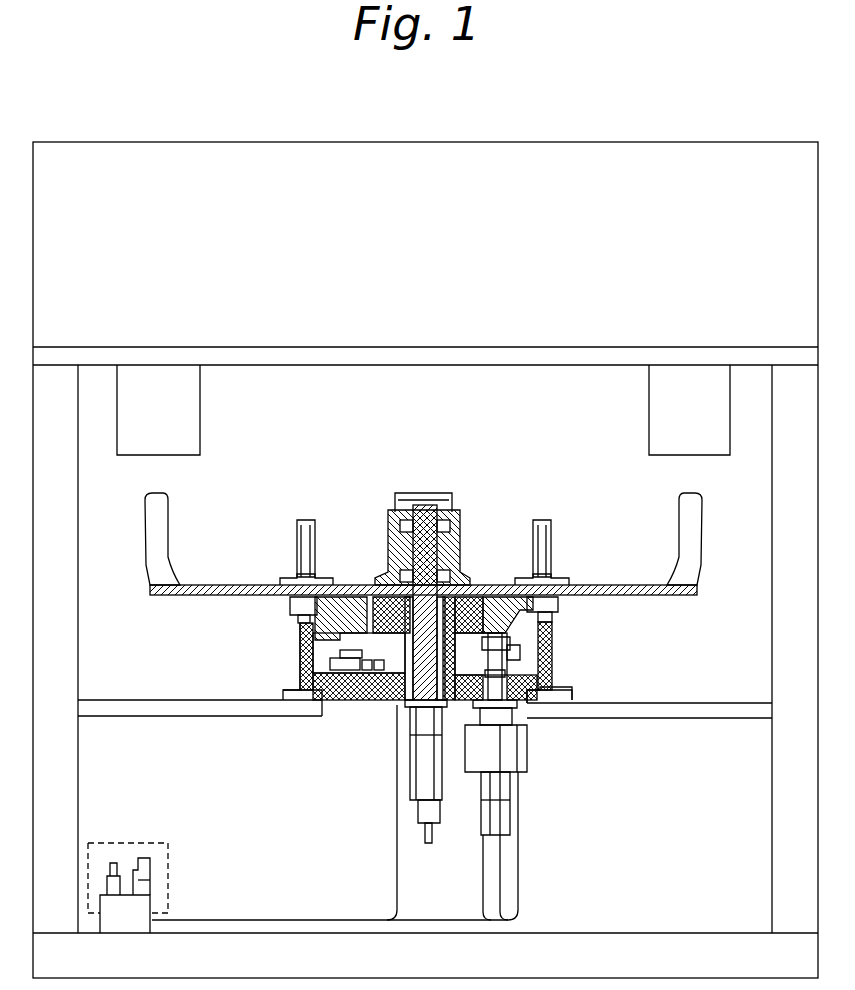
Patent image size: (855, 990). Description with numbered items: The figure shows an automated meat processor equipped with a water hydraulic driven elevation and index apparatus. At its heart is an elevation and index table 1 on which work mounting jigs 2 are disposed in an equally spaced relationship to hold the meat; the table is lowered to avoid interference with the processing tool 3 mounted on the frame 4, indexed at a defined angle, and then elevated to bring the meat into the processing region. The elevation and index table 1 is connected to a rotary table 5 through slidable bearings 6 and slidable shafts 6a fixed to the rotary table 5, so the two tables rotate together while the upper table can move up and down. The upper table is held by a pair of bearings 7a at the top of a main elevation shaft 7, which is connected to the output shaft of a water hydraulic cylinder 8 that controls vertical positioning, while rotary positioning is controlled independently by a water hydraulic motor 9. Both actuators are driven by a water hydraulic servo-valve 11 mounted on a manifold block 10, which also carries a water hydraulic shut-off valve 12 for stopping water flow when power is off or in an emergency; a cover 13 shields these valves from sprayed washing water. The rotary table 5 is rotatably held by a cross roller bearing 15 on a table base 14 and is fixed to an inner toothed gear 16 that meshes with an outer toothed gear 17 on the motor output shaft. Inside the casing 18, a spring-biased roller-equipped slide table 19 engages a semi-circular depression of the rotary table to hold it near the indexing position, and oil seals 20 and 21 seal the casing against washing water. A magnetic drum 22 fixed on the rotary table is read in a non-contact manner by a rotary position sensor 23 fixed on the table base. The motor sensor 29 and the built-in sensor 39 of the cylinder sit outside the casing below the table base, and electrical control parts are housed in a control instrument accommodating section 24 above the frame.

The elevation and index table 1 is at (628, 584).
The work mounting jigs 2 is at (163, 508).
The processing tool 3 is at (183, 406).
The frame 4 is at (783, 748).
The rotary table 5 is at (558, 605).
The slidable bearings 6 is at (293, 573).
The slidable shafts 6a is at (308, 525).
The main elevation shaft 7 is at (427, 495).
The bearings 7a is at (447, 528).
The water hydraulic cylinder 8 is at (420, 792).
The water hydraulic motor 9 is at (515, 757).
The manifold block 10 is at (140, 916).
The water hydraulic servo-valve 11 is at (113, 863).
The water hydraulic shut-off valve 12 is at (152, 876).
The cover 13 is at (170, 848).
The table base 14 is at (330, 700).
The cross roller bearing 15 is at (495, 625).
The inner toothed gear 16 is at (552, 652).
The outer toothed gear 17 is at (552, 670).
The casing 18 is at (300, 630).
The roller-equipped slide table 19 is at (359, 700).
The oil seal 20 is at (548, 626).
The oil seal 21 is at (364, 603).
The magnetic drum 22 is at (300, 655).
The rotary position sensor 23 is at (300, 665).
The control instrument accommodating section 24 is at (399, 256).
The sensor 29 is at (510, 808).
The built-in sensor 39 is at (429, 845).